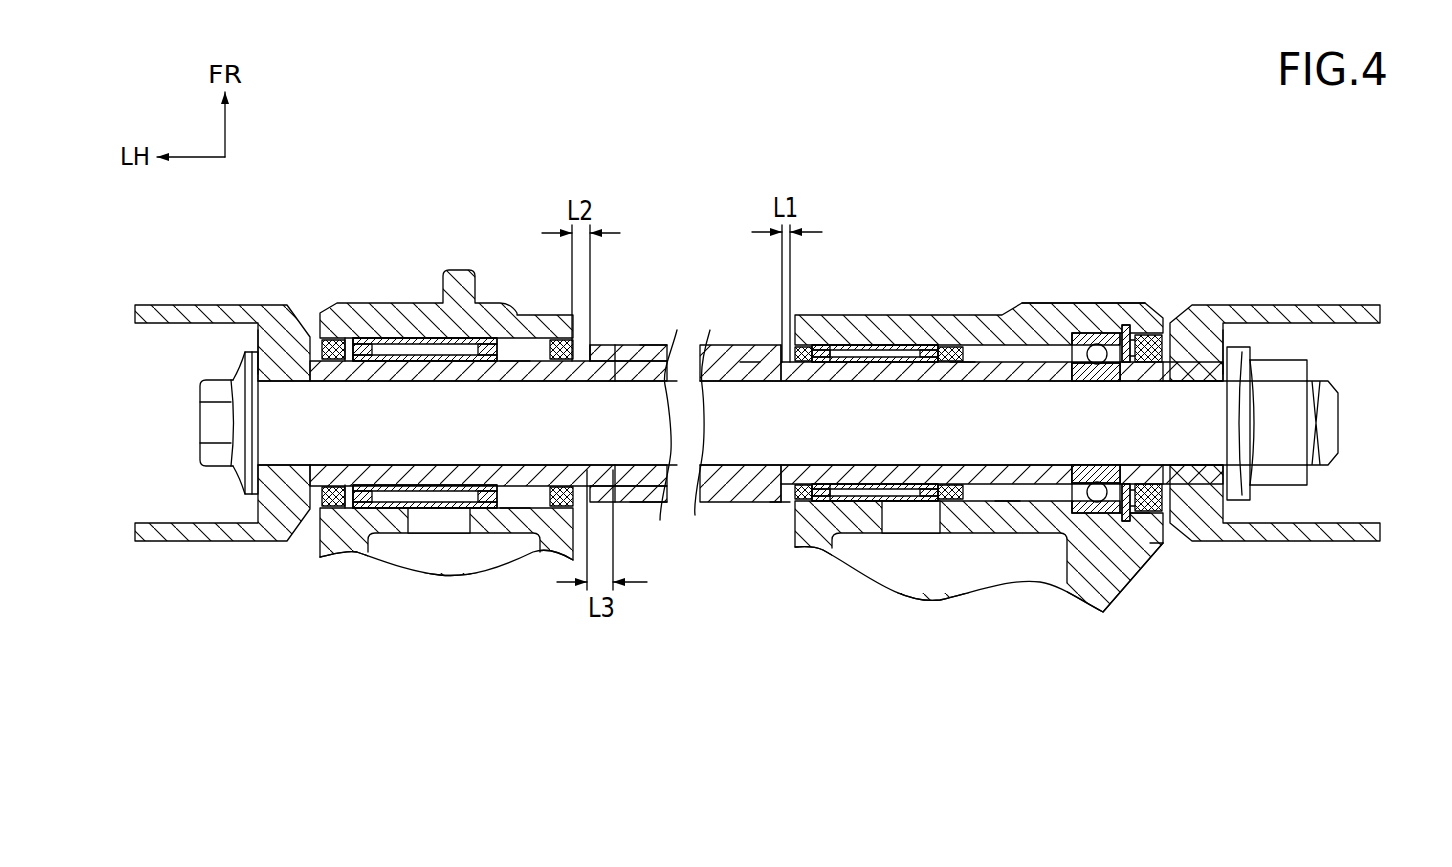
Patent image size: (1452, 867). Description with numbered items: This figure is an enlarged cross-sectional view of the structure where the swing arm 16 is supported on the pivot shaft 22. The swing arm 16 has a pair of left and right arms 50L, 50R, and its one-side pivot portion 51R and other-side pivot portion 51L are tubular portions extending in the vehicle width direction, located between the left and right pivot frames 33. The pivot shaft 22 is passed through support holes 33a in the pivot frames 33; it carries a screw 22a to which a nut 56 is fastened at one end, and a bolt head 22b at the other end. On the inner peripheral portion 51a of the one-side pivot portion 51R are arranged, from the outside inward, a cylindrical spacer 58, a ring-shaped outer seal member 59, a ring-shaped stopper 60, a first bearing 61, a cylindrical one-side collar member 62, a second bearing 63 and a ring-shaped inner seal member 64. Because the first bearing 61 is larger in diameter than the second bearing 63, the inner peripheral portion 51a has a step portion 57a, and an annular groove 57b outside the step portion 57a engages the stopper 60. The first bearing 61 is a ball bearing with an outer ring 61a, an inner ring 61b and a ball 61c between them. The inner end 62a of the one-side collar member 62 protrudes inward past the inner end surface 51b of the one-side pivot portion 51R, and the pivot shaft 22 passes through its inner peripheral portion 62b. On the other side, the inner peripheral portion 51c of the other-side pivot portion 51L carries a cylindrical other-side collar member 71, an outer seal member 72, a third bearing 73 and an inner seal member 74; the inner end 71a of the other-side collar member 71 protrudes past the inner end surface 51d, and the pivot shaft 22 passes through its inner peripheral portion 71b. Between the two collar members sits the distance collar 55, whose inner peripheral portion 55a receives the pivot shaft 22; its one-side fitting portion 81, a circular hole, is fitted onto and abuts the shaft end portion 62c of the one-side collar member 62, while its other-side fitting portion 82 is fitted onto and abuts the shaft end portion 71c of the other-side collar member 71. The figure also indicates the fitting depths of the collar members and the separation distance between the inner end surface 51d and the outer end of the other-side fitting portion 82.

The swing arm 16 is at (1028, 302).
The pivot shaft 22 is at (198, 402).
The screw 22a is at (1316, 383).
The bolt head 22b is at (218, 378).
The pivot frame 33 is at (270, 303).
The support hole 33a is at (260, 447).
The left arm 50L is at (313, 553).
The right arm 50R is at (1113, 597).
The other-side pivot portion 51L is at (412, 302).
The one-side pivot portion 51R is at (923, 312).
The inner peripheral portion 51a is at (962, 350).
The inner end surface 51b is at (781, 345).
The inner peripheral portion 51c is at (515, 303).
The inner end surface 51d is at (591, 343).
The distance collar 55 is at (713, 503).
The inner peripheral portion 55a is at (742, 503).
The nut 56 is at (1280, 345).
The step portion 57a is at (1133, 515).
The annular groove 57b is at (1143, 542).
The spacer 58 is at (1165, 340).
The outer seal member 59 is at (1153, 340).
The stopper 60 is at (1134, 340).
The first bearing 61 is at (1079, 315).
The outer ring 61a is at (1058, 365).
The inner ring 61b is at (1105, 338).
The ball 61c is at (1095, 350).
The one-side collar member 62 is at (997, 345).
The inner end 62a is at (748, 368).
The inner peripheral portion 62b is at (1008, 500).
The shaft end portion 62c is at (781, 503).
The second bearing 63 is at (903, 345).
The inner seal member 64 is at (810, 345).
The other-side collar member 71 is at (433, 355).
The inner end 71a is at (660, 345).
The inner peripheral portion 71b is at (513, 510).
The shaft end portion 71c is at (642, 503).
The outer seal member 72 is at (333, 340).
The third bearing 73 is at (389, 340).
The inner seal member 74 is at (553, 340).
The one-side fitting portion 81 is at (848, 345).
The other-side fitting portion 82 is at (630, 345).